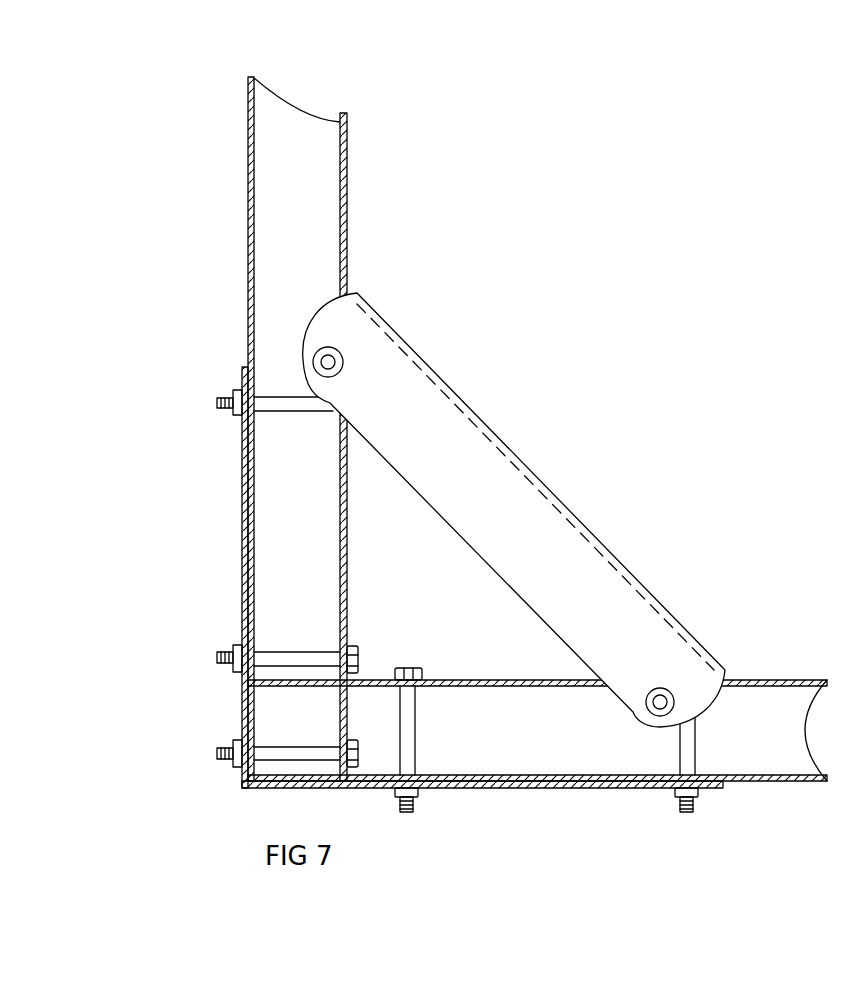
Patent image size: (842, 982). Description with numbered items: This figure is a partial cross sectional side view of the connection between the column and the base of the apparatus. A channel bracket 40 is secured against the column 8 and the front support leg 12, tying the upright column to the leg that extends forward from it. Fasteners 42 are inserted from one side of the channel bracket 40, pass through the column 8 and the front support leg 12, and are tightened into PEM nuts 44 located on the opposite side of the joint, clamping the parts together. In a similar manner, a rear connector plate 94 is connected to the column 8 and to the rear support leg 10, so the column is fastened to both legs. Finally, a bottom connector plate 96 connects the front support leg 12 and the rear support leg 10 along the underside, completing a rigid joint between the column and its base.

The column 8 is at (300, 243).
The rear support leg 10 is at (277, 732).
The front support leg 12 is at (732, 745).
The channel bracket 40 is at (433, 415).
The fasteners 42 is at (225, 400).
The PEM nuts 44 is at (238, 413).
The rear connector plate 94 is at (242, 524).
The bottom connector plate 96 is at (553, 787).